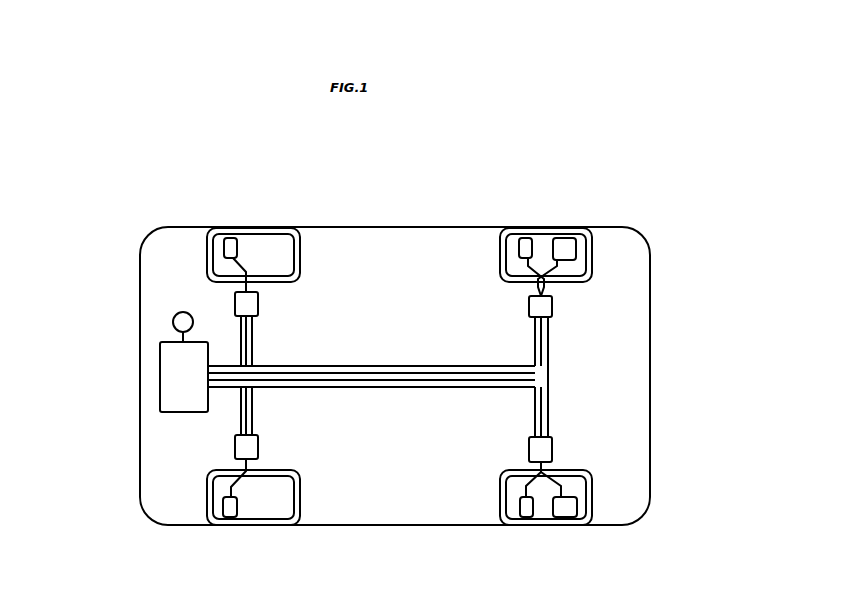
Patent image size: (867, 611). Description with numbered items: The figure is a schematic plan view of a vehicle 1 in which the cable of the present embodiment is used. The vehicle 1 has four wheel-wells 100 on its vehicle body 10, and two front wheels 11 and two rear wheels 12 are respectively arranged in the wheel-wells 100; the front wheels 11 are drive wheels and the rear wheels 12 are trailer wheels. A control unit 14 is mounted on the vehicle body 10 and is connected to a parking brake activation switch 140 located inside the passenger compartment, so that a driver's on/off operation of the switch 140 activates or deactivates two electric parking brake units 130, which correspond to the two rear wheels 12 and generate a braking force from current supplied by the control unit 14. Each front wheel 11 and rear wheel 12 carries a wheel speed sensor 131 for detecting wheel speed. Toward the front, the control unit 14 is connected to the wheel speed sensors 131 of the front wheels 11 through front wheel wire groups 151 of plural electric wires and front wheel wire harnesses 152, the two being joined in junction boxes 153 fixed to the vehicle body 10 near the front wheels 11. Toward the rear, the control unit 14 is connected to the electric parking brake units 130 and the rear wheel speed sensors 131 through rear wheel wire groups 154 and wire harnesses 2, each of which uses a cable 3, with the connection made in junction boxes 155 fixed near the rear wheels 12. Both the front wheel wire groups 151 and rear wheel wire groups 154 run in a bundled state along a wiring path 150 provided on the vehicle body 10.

The vehicle 1 is at (131, 174).
The vehicle body 10 is at (139, 283).
The control unit 14 is at (160, 372).
The parking brake activation switch 140 is at (183, 312).
The wheel-well 100 is at (266, 226).
The front wheel 11 is at (299, 257).
The rear wheel 12 is at (592, 258).
The wheel speed sensor 131 is at (228, 240).
The electric parking brake unit 130 is at (562, 238).
The wiring path 150 is at (377, 365).
The front wheel wire group 151 is at (254, 325).
The front wheel wire harness 152 is at (255, 287).
The junction box 153 is at (258, 306).
The rear wheel wire group 154 is at (549, 330).
The junction box 155 is at (553, 307).
The wire harness 2 is at (550, 289).
The cable 3 is at (533, 284).